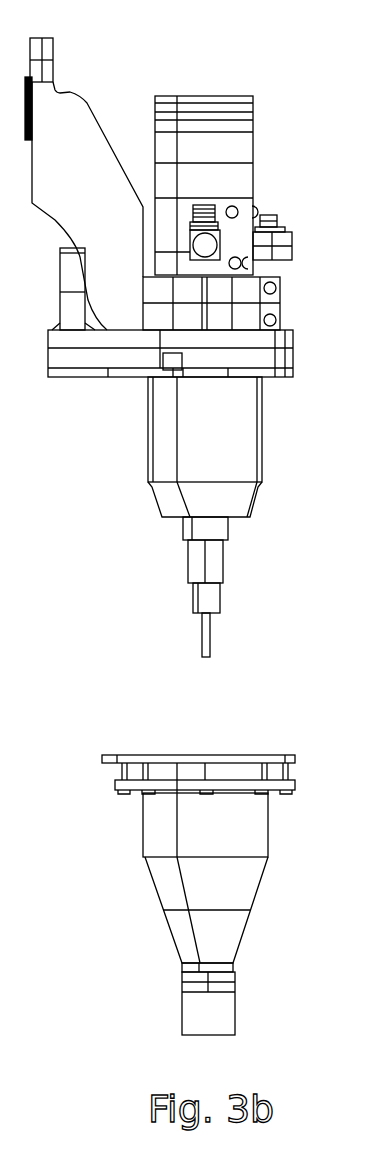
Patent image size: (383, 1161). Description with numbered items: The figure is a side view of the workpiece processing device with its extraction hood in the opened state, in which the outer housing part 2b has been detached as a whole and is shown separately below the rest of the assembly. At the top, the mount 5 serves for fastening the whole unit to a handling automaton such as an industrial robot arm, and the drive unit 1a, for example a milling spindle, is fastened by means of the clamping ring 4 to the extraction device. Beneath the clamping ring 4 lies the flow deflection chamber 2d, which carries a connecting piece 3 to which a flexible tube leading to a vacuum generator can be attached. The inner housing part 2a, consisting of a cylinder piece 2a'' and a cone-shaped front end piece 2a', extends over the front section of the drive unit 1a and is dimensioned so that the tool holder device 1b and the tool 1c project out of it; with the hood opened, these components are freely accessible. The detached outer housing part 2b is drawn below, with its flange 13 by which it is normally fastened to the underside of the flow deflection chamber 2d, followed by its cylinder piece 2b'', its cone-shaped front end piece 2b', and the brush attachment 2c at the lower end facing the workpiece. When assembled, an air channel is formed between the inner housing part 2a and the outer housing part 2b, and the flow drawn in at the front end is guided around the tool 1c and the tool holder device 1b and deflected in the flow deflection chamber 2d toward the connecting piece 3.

The mount 5 is at (58, 92).
The drive unit 1a is at (242, 117).
The connecting piece 3 is at (68, 275).
The clamping ring 4 is at (280, 288).
The flow deflection chamber 2d is at (290, 352).
The inner housing part 2a is at (191, 458).
The cylinder piece 2a'' is at (239, 430).
The cone-shaped front end piece 2a' is at (236, 511).
The tool holder device 1b is at (213, 570).
The tool 1c is at (205, 638).
The flange 13 is at (293, 757).
The outer housing part 2b is at (208, 867).
The cylinder piece 2b'' is at (167, 810).
The cone-shaped front end piece 2b' is at (172, 914).
The brush attachment 2c is at (222, 1008).